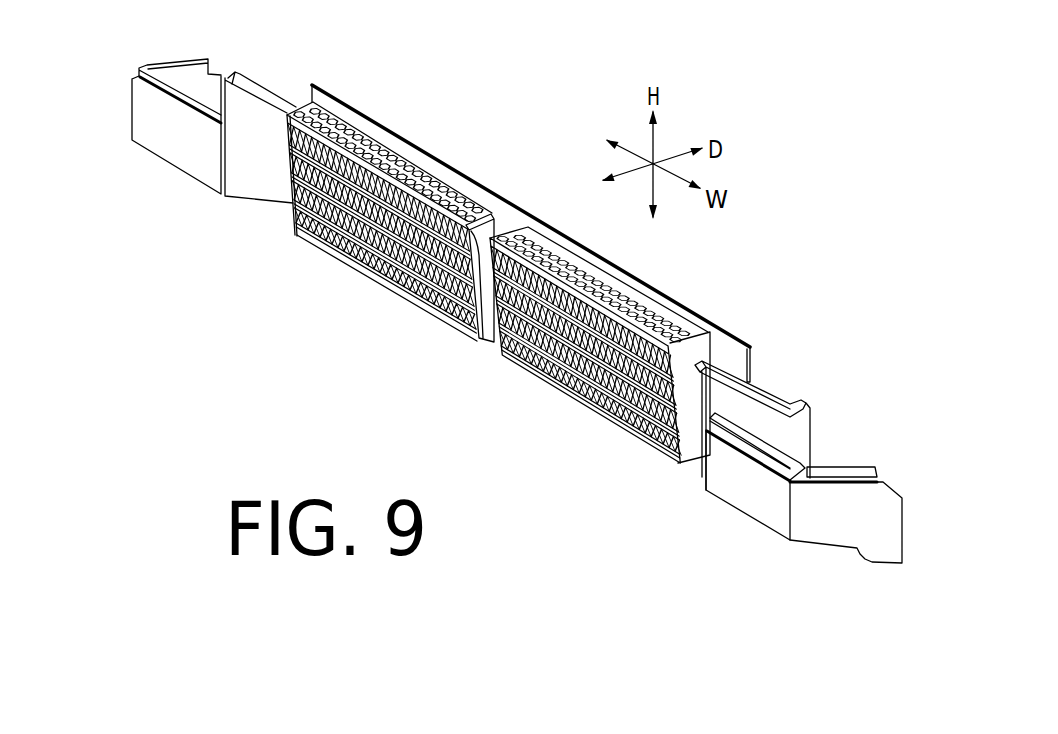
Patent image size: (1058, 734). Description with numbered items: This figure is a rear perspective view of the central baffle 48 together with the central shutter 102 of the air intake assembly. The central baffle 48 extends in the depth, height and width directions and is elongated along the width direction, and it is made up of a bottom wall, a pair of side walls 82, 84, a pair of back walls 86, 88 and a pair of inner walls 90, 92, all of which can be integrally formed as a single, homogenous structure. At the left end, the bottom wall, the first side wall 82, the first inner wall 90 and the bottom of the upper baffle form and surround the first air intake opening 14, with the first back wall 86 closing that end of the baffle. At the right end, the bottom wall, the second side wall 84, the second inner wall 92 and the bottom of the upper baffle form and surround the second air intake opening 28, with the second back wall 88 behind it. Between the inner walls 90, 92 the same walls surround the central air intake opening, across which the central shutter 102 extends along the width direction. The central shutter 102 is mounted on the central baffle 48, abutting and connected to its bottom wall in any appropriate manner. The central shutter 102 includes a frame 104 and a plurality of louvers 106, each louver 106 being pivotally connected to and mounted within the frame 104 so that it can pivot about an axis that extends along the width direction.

The first air intake opening 14 is at (218, 76).
The second air intake opening 28 is at (847, 463).
The central baffle 48 is at (169, 135).
The first side wall 82 is at (176, 63).
The second side wall 84 is at (890, 527).
The first back wall 86 is at (170, 143).
The second back wall 88 is at (748, 495).
The first inner wall 90 is at (250, 185).
The second inner wall 92 is at (813, 430).
The central shutter 102 is at (512, 284).
The frame 104 is at (630, 435).
The louvers 106 is at (375, 203).